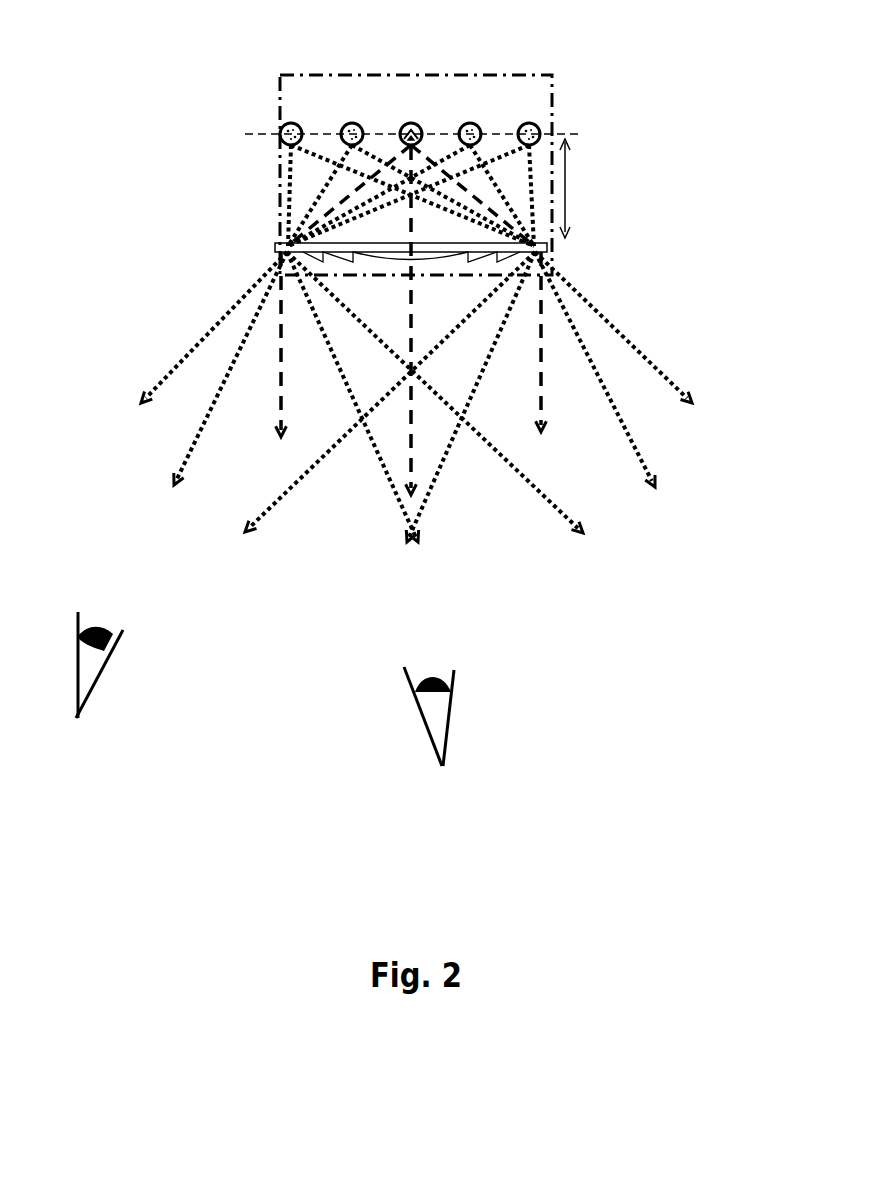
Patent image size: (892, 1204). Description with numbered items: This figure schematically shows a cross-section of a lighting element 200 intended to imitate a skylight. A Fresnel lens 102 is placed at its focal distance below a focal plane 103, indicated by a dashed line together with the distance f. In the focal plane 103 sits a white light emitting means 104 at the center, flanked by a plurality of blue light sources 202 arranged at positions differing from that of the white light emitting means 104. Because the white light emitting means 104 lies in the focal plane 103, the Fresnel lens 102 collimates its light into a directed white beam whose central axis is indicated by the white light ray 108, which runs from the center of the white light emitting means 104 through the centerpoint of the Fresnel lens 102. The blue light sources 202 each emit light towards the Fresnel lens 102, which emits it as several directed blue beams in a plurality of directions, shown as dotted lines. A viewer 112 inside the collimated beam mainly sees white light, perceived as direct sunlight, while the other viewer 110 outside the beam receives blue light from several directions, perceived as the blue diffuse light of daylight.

The lighting element 200 is at (552, 90).
The focal plane 103 is at (257, 135).
The blue light sources 202 is at (292, 122).
The white light emitting means 104 is at (411, 122).
The Fresnel lens 102 is at (276, 252).
The white light ray 108 is at (404, 481).
The other viewer 110 is at (82, 703).
The viewer 112 is at (438, 748).